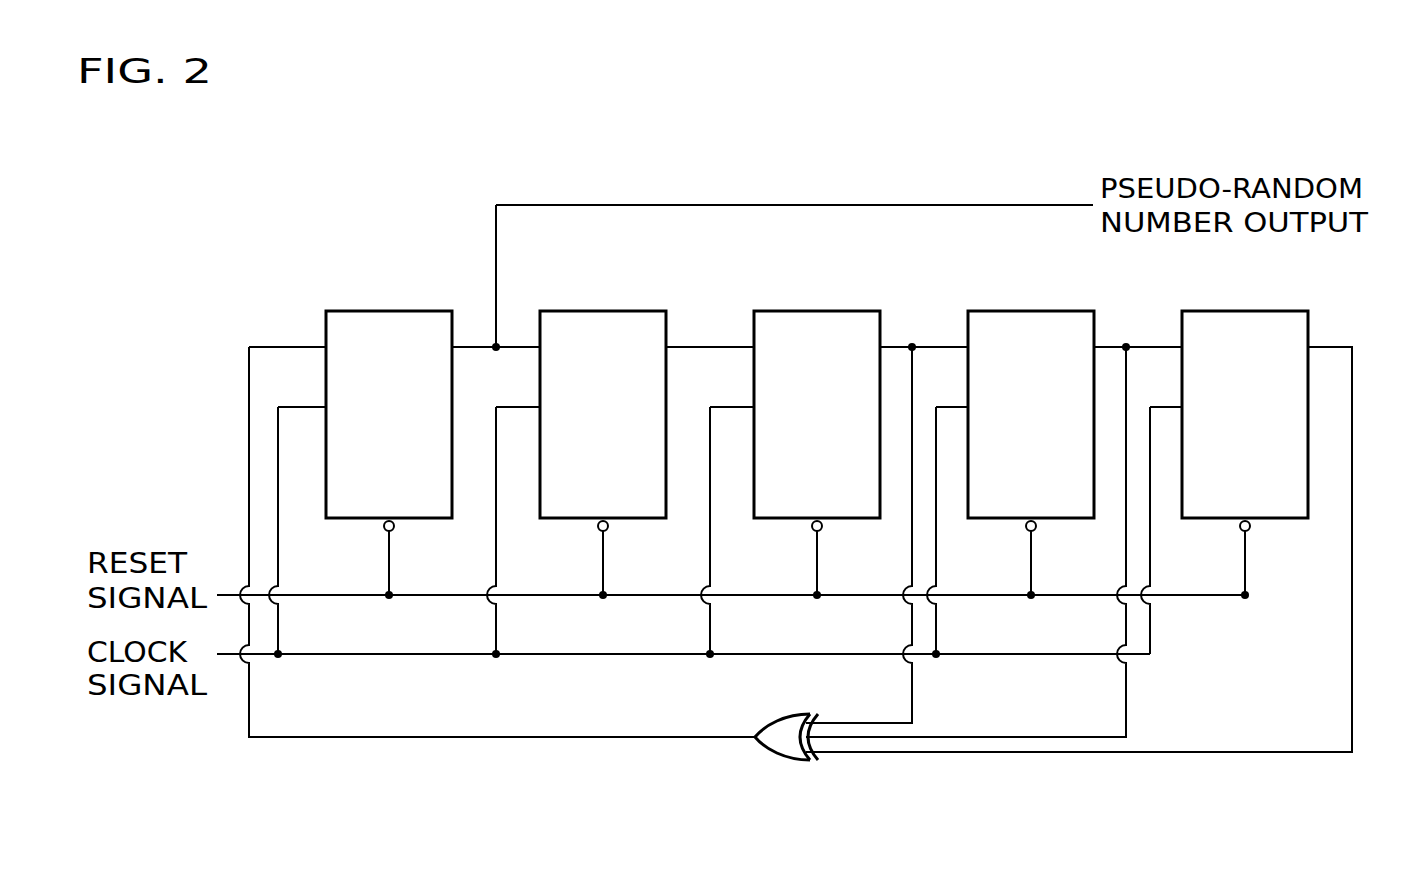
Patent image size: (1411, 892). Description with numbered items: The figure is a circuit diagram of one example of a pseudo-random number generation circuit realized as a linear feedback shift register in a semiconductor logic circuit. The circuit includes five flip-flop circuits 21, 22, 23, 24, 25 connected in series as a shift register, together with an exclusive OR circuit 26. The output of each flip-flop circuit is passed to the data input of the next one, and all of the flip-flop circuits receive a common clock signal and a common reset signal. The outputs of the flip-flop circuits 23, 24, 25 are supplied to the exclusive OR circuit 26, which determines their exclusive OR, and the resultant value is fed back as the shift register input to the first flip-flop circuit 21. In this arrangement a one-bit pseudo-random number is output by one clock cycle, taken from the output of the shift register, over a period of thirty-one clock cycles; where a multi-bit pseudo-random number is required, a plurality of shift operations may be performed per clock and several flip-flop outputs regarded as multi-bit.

The flip-flop circuit 21 is at (382, 311).
The flip-flop circuit 22 is at (595, 311).
The flip-flop circuit 23 is at (809, 311).
The flip-flop circuit 24 is at (1023, 311).
The flip-flop circuit 25 is at (1237, 311).
The exclusive OR circuit 26 is at (790, 762).